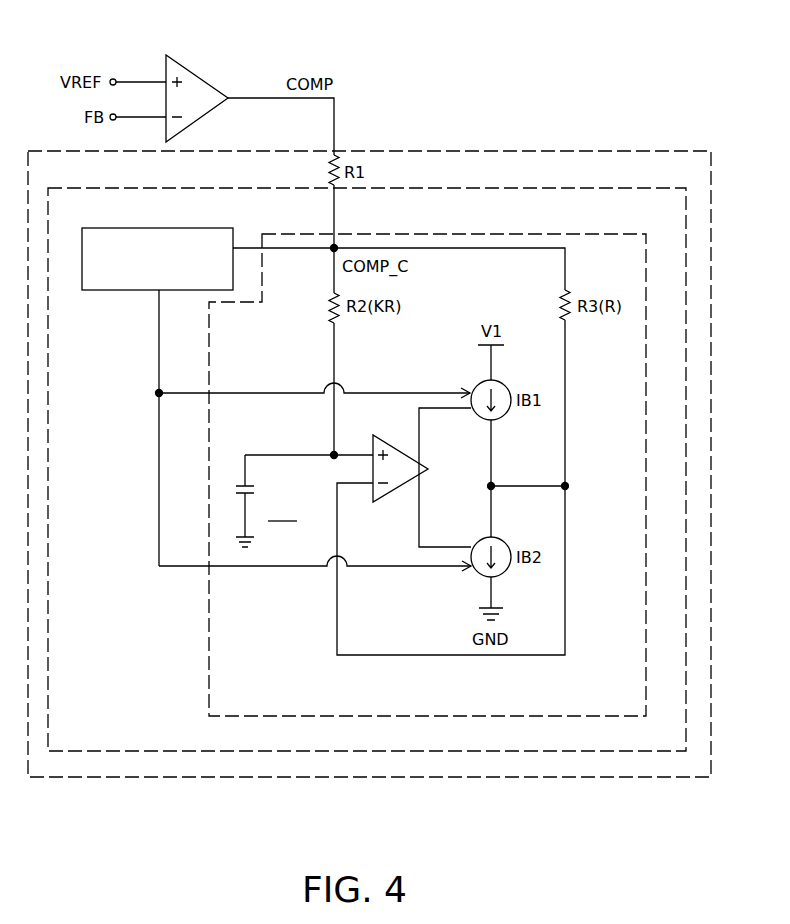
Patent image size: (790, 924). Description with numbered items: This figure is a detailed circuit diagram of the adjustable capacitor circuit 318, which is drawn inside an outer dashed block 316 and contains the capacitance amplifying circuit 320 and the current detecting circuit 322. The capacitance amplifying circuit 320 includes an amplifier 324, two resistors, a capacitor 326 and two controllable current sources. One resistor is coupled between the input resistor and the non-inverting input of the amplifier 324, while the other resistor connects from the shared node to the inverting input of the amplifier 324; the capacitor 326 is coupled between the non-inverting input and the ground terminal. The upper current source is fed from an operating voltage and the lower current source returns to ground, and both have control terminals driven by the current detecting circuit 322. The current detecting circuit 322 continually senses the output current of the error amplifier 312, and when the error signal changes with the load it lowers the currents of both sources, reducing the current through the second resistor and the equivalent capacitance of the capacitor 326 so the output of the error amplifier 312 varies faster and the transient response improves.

The error amplifier 312 is at (200, 64).
The compensation circuit 316 is at (577, 150).
The adjustable capacitor circuit 318 is at (601, 188).
The capacitance amplifying circuit 320 is at (588, 234).
The current detecting circuit 322 is at (222, 228).
The amplifier 324 is at (398, 502).
The capacitor 326 is at (285, 501).